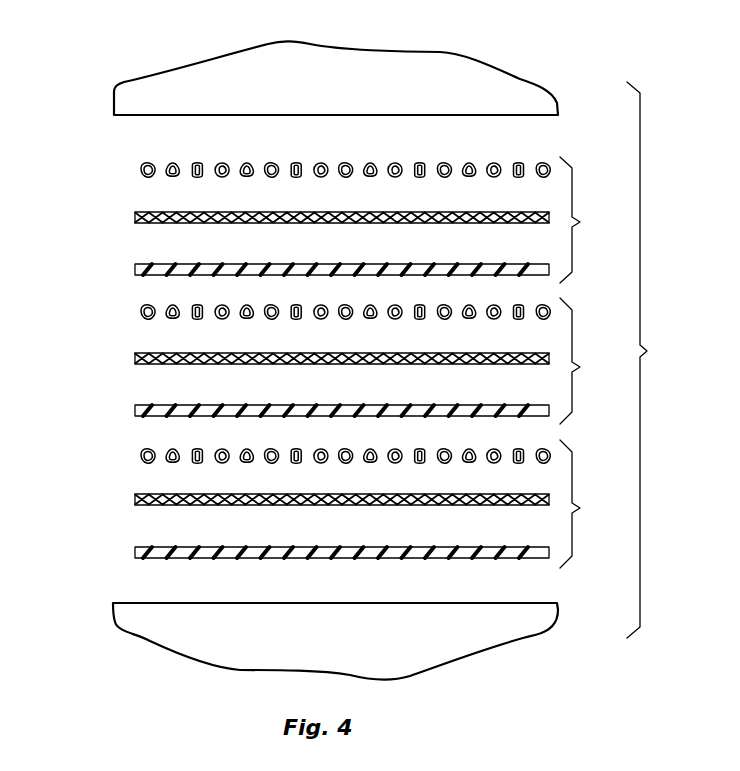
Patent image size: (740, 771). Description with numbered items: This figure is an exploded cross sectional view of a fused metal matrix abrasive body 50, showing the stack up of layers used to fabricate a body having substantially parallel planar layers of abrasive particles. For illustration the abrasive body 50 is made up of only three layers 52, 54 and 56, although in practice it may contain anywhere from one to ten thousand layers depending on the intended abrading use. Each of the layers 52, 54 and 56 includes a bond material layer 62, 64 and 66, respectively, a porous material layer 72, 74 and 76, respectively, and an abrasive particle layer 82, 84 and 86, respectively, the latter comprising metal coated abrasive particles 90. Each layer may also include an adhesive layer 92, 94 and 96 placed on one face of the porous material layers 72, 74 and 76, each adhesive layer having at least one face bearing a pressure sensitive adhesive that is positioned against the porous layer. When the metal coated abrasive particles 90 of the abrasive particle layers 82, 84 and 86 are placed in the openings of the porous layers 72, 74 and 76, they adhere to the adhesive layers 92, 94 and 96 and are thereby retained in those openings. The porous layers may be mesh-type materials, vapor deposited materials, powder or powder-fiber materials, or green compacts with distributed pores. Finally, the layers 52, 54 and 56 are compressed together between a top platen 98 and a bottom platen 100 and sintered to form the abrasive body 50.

The abrasive body 50 is at (361, 360).
The layer 52 is at (330, 204).
The layer 54 is at (328, 353).
The layer 56 is at (329, 499).
The bond material layer 62 is at (303, 256).
The bond material layer 64 is at (303, 397).
The bond material layer 66 is at (303, 541).
The porous material layer 72 is at (135, 216).
The porous material layer 74 is at (135, 357).
The porous material layer 76 is at (135, 499).
The abrasive particle layer 82 is at (330, 151).
The abrasive particle layer 84 is at (133, 308).
The abrasive particle layer 86 is at (133, 450).
The metal coated abrasive particles 90 is at (520, 163).
The adhesive layer 92 is at (473, 264).
The adhesive layer 94 is at (473, 405).
The adhesive layer 96 is at (473, 547).
The top platen 98 is at (447, 58).
The bottom platen 100 is at (472, 639).